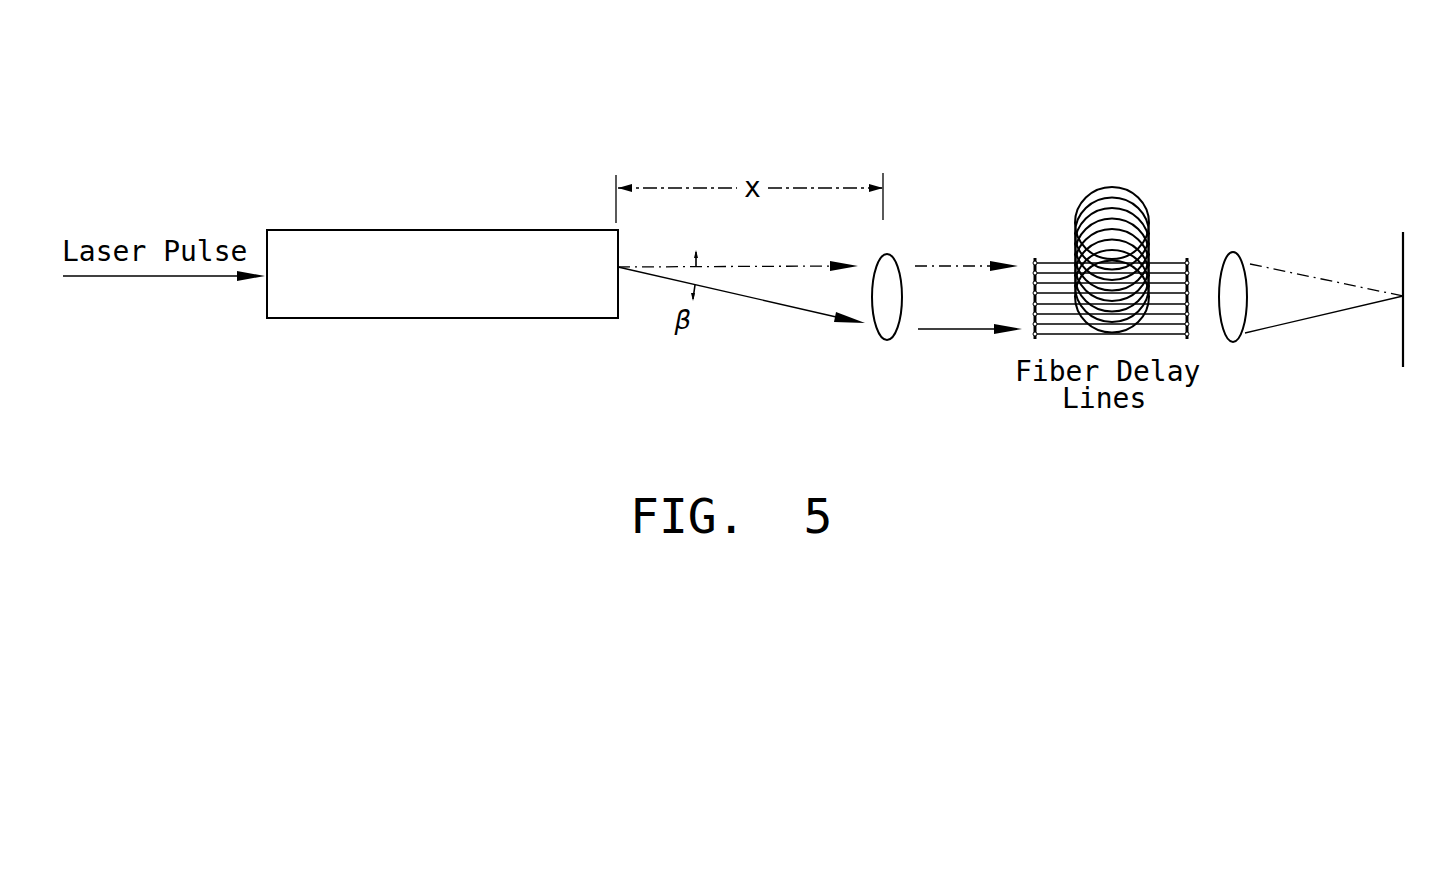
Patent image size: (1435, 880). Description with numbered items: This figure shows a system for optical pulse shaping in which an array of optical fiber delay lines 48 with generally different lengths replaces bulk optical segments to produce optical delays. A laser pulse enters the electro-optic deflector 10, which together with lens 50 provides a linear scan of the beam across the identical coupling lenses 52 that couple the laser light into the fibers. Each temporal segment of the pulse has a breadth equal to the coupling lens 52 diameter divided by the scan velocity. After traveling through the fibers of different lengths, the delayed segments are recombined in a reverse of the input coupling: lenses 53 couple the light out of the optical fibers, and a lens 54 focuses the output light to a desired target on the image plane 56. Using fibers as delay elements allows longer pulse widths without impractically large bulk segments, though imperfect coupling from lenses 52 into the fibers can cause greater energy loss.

The electro-optic deflector 10 is at (457, 318).
The optical fiber delay lines 48 is at (1111, 178).
The lens 50 is at (893, 262).
The coupling lenses 52 is at (1034, 250).
The output lenses 53 is at (1185, 250).
The focusing lens 54 is at (1240, 250).
The image plane 56 is at (1403, 232).